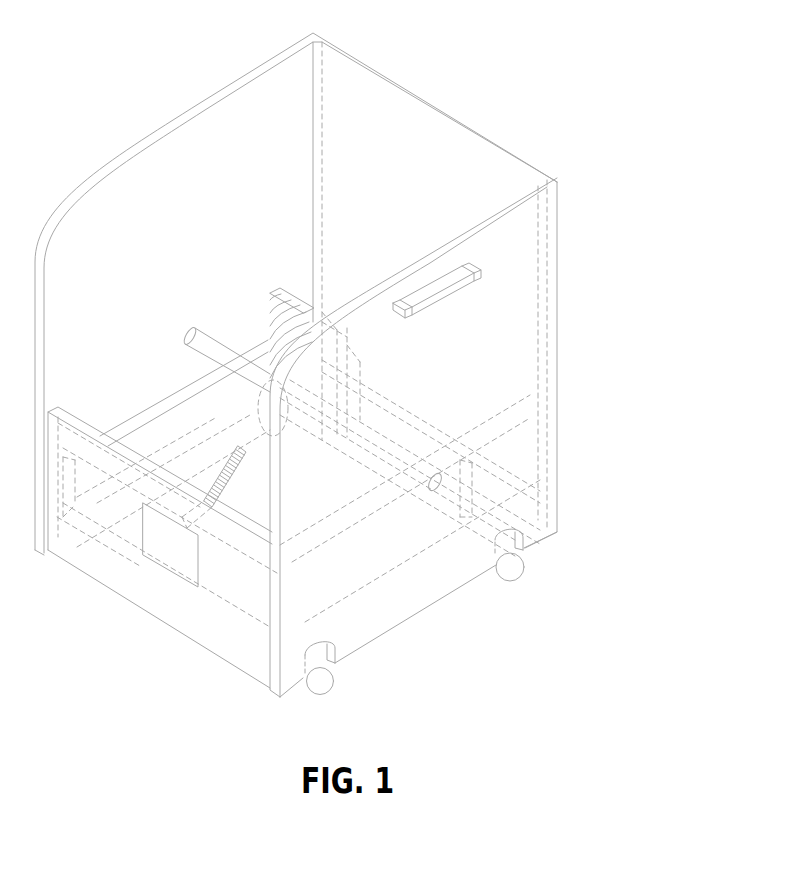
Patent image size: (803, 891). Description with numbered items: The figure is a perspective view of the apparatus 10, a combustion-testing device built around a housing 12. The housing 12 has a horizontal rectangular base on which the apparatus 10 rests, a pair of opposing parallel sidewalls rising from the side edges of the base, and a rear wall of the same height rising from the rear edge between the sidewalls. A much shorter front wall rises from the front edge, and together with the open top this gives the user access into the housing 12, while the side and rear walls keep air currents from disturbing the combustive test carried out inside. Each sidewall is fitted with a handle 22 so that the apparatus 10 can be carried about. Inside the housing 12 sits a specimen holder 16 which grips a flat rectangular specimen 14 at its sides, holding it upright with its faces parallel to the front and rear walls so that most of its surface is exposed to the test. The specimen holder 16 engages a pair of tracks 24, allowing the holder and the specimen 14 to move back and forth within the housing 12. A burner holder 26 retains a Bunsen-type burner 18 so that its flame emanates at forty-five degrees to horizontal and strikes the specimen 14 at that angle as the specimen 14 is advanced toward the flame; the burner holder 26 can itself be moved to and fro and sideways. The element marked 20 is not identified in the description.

The apparatus 10 is at (590, 108).
The housing 12 is at (557, 445).
The specimen 14 is at (282, 296).
The specimen holder 16 is at (420, 470).
The burner 18 is at (223, 500).
The caster wheel 20 is at (512, 575).
The handle 22 is at (473, 278).
The tracks 24 is at (353, 557).
The burner holder 26 is at (172, 553).